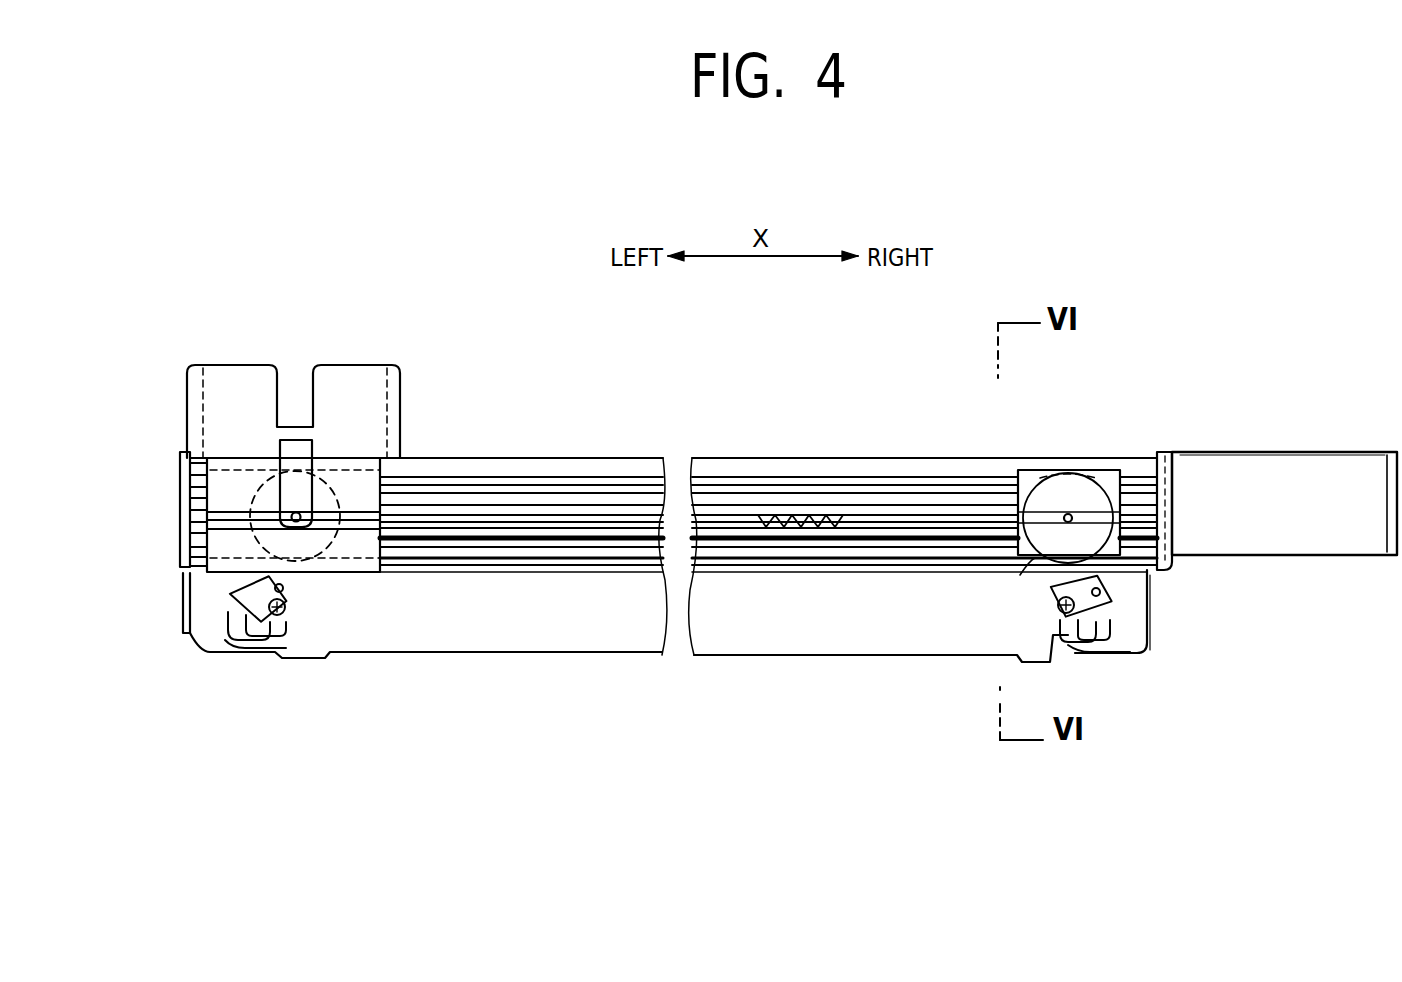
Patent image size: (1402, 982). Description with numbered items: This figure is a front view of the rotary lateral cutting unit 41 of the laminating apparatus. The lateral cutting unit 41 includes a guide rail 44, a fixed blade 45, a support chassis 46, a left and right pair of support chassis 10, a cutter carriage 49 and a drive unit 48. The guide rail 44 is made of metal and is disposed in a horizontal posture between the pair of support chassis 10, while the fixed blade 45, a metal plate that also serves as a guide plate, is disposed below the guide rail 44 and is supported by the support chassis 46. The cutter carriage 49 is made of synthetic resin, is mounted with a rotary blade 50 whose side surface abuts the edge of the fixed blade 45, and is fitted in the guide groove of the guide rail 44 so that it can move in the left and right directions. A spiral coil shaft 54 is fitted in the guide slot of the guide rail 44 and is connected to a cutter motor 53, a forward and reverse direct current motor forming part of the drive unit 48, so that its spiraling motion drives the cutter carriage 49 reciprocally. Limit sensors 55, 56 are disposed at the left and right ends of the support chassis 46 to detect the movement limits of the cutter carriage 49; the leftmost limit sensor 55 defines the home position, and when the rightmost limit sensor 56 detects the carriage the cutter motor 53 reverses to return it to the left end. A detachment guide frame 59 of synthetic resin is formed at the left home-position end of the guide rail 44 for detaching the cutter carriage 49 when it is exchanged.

The lateral cutting unit 41 is at (347, 245).
The guide rail 44 is at (566, 456).
The fixed blade 45 is at (517, 566).
The support chassis 46 is at (607, 637).
The drive unit 48 is at (1312, 453).
The cutter carriage 49 is at (363, 573).
The rotary blade 50 is at (1030, 573).
The cutter motor 53 is at (1327, 537).
The spiral coil shaft 54 is at (810, 513).
The limit sensor 55 is at (227, 580).
The limit sensor 56 is at (1120, 590).
The detachment guide frame 59 is at (370, 413).
The support chassis 10 is at (178, 472).